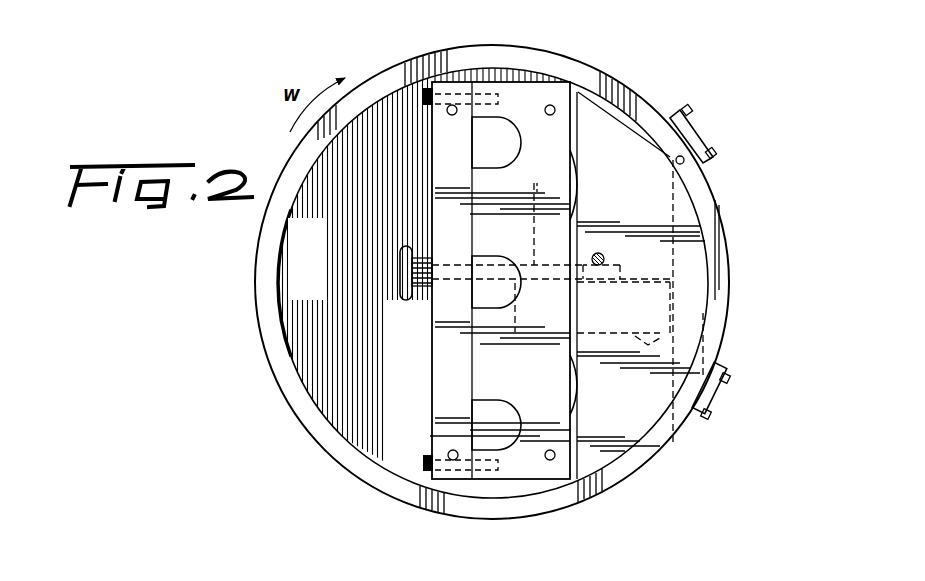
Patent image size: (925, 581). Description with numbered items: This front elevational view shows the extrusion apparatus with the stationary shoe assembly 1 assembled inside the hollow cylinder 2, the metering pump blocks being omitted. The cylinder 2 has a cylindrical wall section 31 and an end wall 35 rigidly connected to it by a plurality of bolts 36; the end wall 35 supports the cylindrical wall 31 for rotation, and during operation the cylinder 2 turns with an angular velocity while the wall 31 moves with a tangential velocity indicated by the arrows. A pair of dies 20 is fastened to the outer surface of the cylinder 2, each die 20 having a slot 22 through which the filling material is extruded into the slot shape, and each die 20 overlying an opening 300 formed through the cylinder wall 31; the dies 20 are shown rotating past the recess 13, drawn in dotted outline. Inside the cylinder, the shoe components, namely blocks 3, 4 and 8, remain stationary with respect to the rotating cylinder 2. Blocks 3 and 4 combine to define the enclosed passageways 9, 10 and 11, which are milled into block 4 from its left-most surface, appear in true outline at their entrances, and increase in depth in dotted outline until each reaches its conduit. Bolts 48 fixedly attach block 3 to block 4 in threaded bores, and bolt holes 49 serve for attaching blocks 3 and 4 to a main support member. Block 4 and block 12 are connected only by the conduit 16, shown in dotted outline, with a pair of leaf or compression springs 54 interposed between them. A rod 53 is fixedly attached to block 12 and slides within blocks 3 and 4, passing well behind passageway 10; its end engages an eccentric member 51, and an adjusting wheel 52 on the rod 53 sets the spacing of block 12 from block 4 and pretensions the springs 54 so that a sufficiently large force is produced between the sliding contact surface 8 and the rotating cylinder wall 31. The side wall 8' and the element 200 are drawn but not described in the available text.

The shoe assembly 1 is at (502, 286).
The hollow cylinder 2 is at (439, 285).
The block 3 is at (501, 280).
The block 4 is at (550, 285).
The sliding contact surface 8 is at (690, 472).
The side wall 8' is at (655, 504).
The passageway 9 is at (496, 142).
The passageway 10 is at (496, 282).
The passageway 11 is at (496, 425).
The block 12 is at (641, 336).
The recess 13 is at (712, 235).
The conduit 16 is at (725, 328).
The die 20 is at (675, 116).
The slot 22 is at (657, 142).
The cylindrical wall section 31 is at (345, 470).
The end wall 35 is at (355, 269).
The bolt 36 is at (692, 110).
The bolt 48 is at (428, 92).
The bolt hole 49 is at (456, 106).
The eccentric member 51 is at (602, 253).
The adjusting wheel 52 is at (404, 277).
The rod 53 is at (537, 174).
The spring 54 is at (578, 185).
The clamp part 200 is at (730, 403).
The opening 300 is at (687, 167).